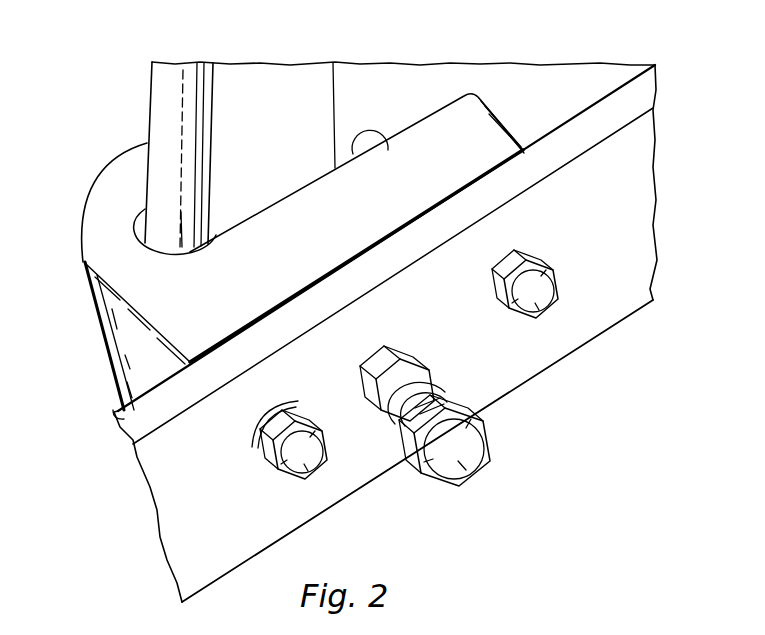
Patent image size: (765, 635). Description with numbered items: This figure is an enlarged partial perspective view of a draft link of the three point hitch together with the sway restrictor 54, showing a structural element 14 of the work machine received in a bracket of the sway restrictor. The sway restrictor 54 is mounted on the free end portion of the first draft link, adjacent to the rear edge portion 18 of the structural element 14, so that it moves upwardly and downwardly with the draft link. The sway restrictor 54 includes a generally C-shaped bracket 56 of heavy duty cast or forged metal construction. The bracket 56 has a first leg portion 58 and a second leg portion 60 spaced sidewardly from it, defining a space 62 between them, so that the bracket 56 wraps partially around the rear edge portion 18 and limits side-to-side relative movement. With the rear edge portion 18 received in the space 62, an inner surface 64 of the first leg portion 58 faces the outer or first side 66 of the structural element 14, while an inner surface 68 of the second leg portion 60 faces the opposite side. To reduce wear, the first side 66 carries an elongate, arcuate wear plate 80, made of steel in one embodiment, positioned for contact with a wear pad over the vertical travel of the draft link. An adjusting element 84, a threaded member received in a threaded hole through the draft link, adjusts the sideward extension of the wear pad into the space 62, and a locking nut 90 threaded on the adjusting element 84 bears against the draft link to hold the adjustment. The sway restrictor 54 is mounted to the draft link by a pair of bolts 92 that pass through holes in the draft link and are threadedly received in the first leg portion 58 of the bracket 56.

The structural element 14 is at (150, 60).
The rear edge portion 18 is at (147, 106).
The sway restrictor 54 is at (95, 320).
The C-shaped bracket 56 is at (110, 372).
The first leg portion 58 is at (483, 175).
The second leg portion 60 is at (147, 143).
The space 62 is at (140, 225).
The inner surface of first leg portion 64 is at (382, 136).
The first side of structural element 66 is at (442, 80).
The inner surface of second leg portion 68 is at (138, 213).
The wear plate 80 is at (205, 83).
The adjusting element 84 is at (458, 480).
The locking nut 90 is at (445, 374).
The bolts 92 is at (565, 278).